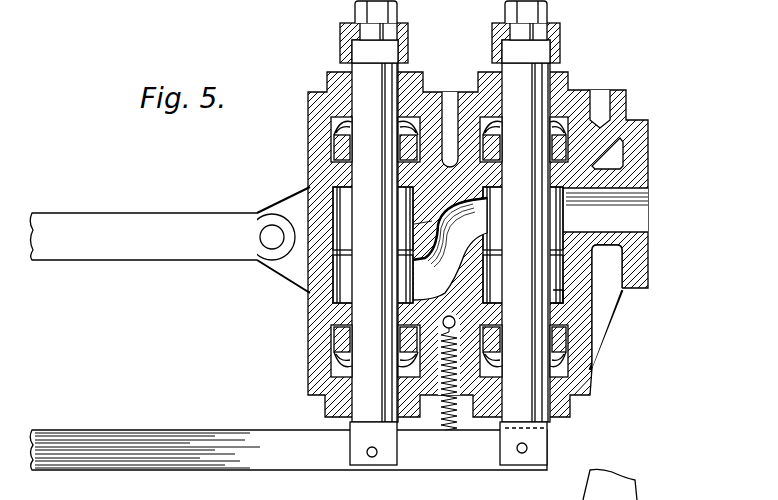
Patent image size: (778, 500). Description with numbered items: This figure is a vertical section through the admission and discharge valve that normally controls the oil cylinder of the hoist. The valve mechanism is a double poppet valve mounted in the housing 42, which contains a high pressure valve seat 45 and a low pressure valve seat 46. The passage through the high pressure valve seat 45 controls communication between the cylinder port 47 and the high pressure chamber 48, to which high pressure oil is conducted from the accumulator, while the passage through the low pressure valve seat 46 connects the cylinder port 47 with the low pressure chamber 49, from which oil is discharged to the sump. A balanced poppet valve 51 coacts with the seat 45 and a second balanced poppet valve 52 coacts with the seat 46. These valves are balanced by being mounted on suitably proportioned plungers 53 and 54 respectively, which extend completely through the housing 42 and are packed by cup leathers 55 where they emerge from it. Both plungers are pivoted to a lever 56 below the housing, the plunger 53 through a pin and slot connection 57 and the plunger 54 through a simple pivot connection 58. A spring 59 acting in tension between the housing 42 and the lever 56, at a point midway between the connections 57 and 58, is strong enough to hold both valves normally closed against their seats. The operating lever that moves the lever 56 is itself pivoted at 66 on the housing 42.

The housing 42 is at (308, 320).
The high pressure valve seat 45 is at (545, 234).
The low pressure valve seat 46 is at (442, 249).
The cylinder port 47 is at (625, 218).
The high pressure chamber 48 is at (553, 295).
The low pressure chamber 49 is at (310, 192).
The balanced poppet valve 51 is at (548, 267).
The balanced poppet valve 52 is at (405, 268).
The plunger 53 is at (526, 211).
The plunger 54 is at (373, 211).
The cup leathers 55 is at (340, 123).
The lever 56 is at (288, 450).
The pin and slot connection 57 is at (522, 455).
The pivot connection 58 is at (372, 458).
The spring 59 is at (446, 420).
The pivot 66 is at (143, 236).